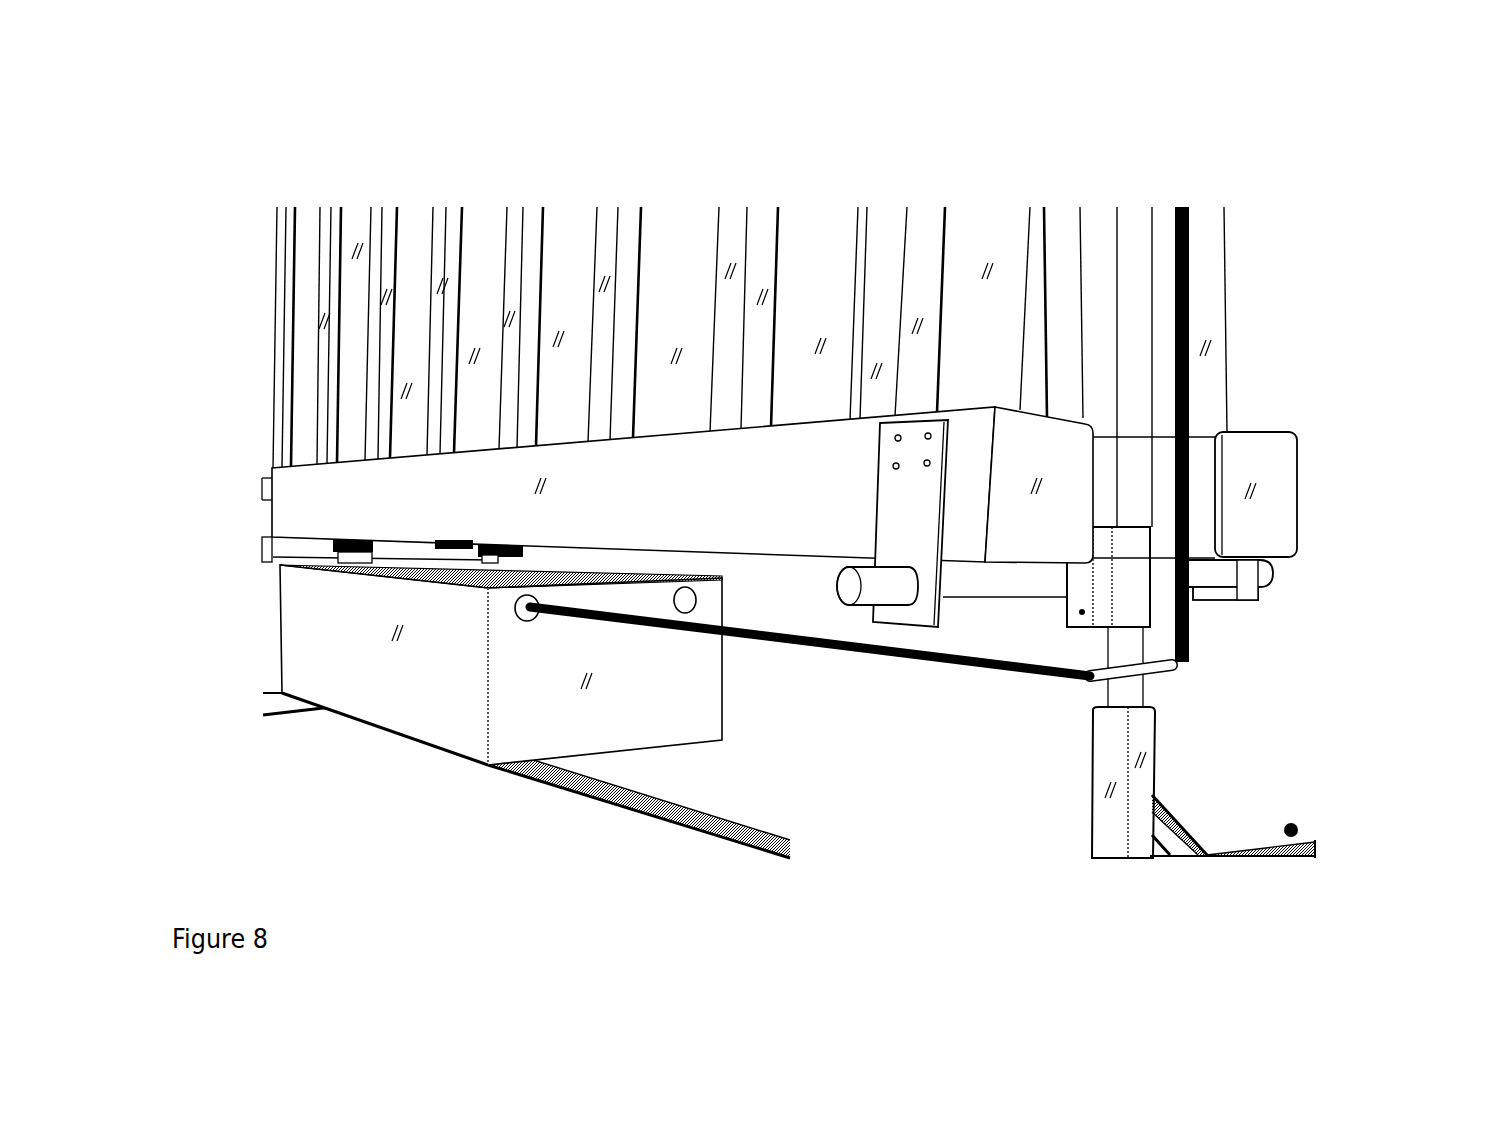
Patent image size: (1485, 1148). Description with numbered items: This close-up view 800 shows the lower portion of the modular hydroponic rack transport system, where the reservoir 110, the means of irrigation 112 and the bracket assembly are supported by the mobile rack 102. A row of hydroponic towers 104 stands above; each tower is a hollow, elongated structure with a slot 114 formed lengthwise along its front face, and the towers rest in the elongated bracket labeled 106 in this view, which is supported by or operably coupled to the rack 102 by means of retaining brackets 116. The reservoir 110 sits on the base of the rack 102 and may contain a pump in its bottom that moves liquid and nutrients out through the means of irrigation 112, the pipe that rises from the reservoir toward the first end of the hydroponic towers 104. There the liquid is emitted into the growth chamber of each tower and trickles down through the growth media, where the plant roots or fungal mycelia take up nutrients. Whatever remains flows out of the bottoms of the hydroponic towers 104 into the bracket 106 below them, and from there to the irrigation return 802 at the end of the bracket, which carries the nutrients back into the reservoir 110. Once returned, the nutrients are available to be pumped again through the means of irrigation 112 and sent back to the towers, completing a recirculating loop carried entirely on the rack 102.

The close-up view of the reservoir, means of irrigation and lower brackets 800 is at (783, 469).
The hydroponic tower 104 is at (750, 324).
The slot 114 is at (951, 269).
The upper bracket 106 is at (1347, 460).
The irrigation return 802 is at (270, 560).
The retaining bracket 116 is at (1248, 585).
The means of irrigation 112 is at (956, 444).
The reservoir 110 is at (693, 708).
The rack 102 is at (652, 820).